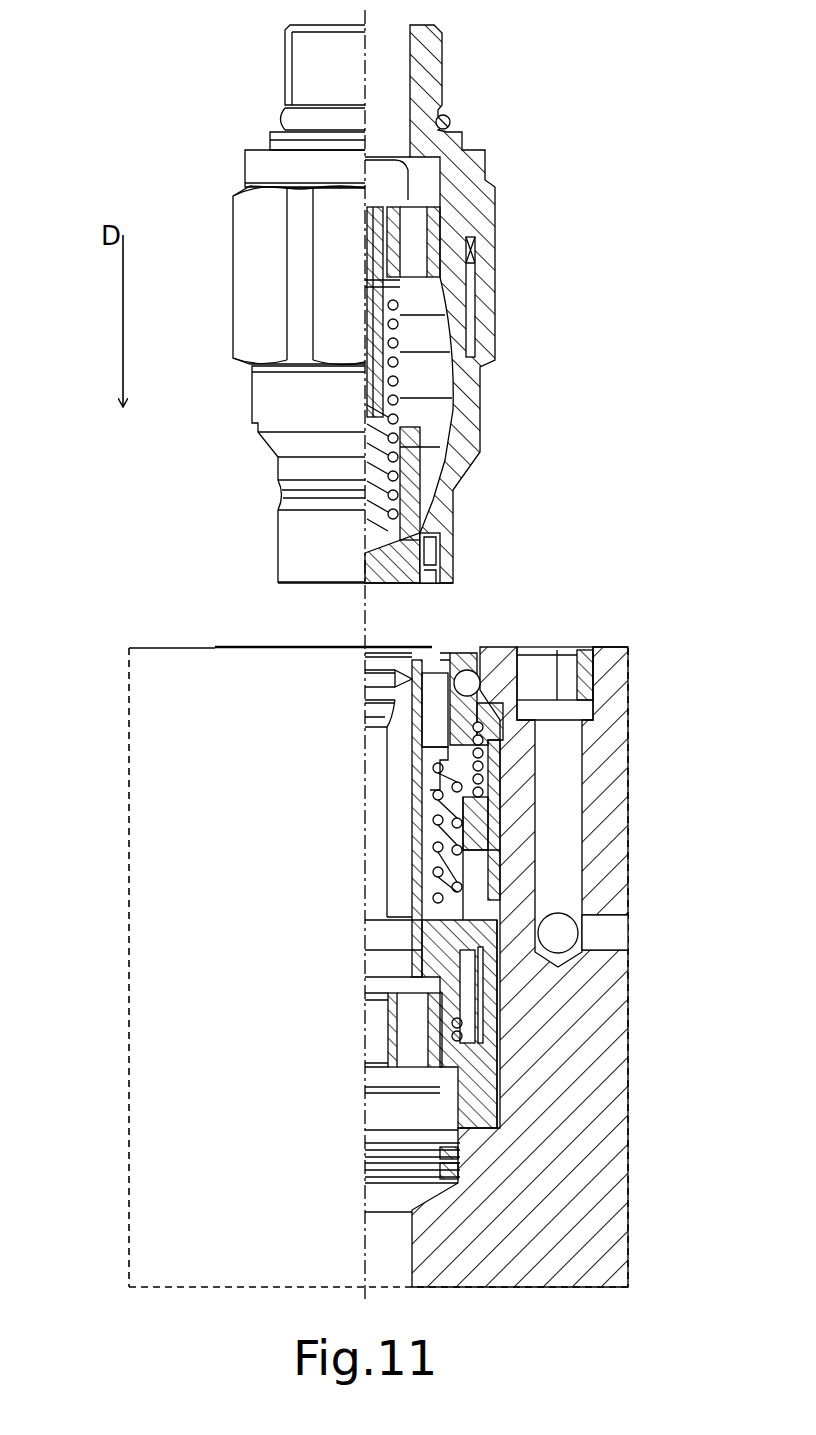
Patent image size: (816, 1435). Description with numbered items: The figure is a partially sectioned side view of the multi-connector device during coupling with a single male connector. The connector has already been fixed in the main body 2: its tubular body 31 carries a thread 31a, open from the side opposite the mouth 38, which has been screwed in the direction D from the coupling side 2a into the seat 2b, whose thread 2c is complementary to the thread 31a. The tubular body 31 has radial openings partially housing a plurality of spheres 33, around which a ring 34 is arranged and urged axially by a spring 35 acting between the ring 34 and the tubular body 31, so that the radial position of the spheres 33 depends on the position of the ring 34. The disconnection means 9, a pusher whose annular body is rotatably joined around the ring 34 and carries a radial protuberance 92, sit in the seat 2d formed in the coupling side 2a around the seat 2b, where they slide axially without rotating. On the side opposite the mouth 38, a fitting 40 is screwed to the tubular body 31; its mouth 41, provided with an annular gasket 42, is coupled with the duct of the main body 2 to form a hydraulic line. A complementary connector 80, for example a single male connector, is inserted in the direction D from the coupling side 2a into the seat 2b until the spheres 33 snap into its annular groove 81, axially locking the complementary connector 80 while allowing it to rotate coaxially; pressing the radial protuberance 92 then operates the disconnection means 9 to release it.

The complementary connector 80 is at (176, 158).
The annular groove 81 is at (453, 493).
The disconnection means 9 is at (205, 616).
The main body 2 is at (170, 1143).
The coupling side 2a is at (618, 647).
The seat 2b is at (493, 867).
The thread 2c is at (490, 1060).
The seat 2d is at (585, 710).
The radial protuberance 92 is at (573, 648).
The mouth 38 is at (463, 655).
The spheres 33 is at (467, 690).
The spring 35 is at (475, 710).
The ring 34 is at (493, 777).
The tubular body 31 is at (490, 893).
The thread 31a is at (500, 1000).
The fitting 40 is at (487, 1088).
The annular gasket 42 is at (460, 1159).
The mouth 41 is at (460, 1177).